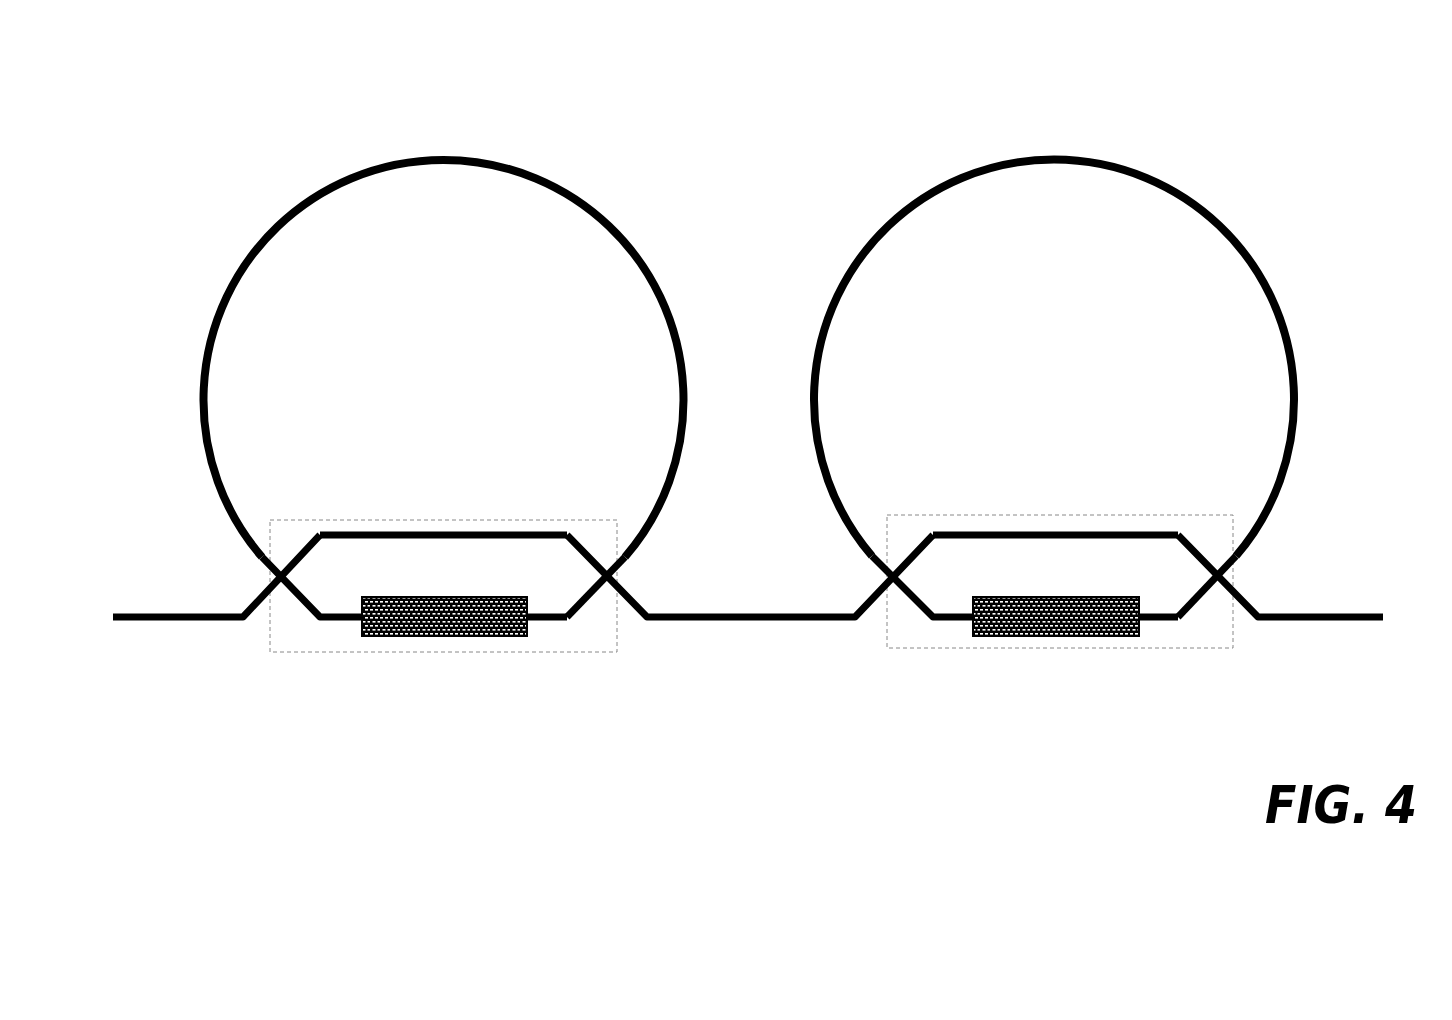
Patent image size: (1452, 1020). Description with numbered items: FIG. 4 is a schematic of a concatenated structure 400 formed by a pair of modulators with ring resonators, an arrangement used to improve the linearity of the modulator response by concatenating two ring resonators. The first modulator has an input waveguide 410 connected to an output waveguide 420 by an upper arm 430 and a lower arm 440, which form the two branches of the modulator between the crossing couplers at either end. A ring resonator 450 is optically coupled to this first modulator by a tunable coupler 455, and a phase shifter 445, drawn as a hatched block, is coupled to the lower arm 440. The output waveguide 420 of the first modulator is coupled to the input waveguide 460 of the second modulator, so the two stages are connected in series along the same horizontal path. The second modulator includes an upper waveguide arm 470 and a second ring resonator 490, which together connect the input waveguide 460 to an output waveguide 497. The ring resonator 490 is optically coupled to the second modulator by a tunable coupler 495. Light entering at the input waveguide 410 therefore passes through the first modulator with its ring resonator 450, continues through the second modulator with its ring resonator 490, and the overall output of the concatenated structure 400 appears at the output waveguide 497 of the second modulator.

The optical filter device 400 is at (1378, 88).
The input waveguide 410 is at (175, 611).
The output waveguide 420 is at (647, 620).
The upper arm 430 is at (322, 530).
The lower arm 440 is at (318, 622).
The phase shifter 445 is at (468, 640).
The ring resonator 450 is at (550, 184).
The tunable coupler 455 is at (621, 531).
The input waveguide 460 is at (851, 621).
The upper waveguide arm 470 is at (932, 530).
The ring resonator 490 is at (1160, 184).
The tunable coupler 495 is at (1233, 622).
The output waveguide 497 is at (1357, 611).